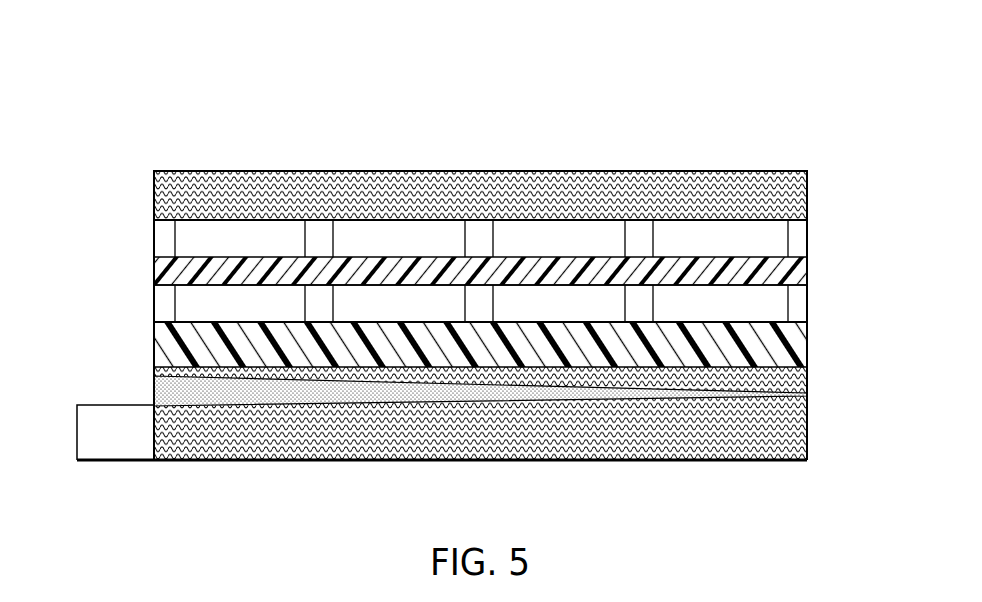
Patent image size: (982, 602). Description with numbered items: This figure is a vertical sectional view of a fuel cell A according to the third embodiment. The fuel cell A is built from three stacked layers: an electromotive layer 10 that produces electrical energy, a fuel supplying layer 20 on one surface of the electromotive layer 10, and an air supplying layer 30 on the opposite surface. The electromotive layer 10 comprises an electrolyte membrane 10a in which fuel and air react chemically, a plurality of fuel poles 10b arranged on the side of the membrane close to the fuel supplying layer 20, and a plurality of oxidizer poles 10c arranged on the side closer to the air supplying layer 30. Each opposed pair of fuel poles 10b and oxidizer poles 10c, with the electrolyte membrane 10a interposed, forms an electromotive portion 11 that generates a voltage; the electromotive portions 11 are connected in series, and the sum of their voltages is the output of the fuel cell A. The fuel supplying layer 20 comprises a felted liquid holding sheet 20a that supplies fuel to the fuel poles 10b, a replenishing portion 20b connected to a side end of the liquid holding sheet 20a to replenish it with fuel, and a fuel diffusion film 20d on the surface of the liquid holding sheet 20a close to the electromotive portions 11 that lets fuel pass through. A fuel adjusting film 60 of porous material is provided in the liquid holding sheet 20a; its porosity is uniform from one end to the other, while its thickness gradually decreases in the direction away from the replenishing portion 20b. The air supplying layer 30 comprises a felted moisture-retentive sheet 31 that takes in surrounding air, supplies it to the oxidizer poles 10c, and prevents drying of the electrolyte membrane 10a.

The fuel cell A is at (693, 62).
The electromotive layer 10 is at (818, 223).
The electrolyte membrane 10a is at (155, 272).
The fuel poles 10b is at (295, 294).
The oxidizer poles 10c is at (249, 225).
The electromotive portions 11 is at (313, 237).
The fuel supplying layer 20 is at (818, 325).
The liquid holding sheet 20a is at (227, 447).
The replenishing portion 20b is at (118, 440).
The fuel diffusion film 20d is at (155, 348).
The air supplying layer 30 is at (818, 172).
The moisture-retentive sheet 31 is at (210, 172).
The fuel adjusting film 60 is at (523, 400).